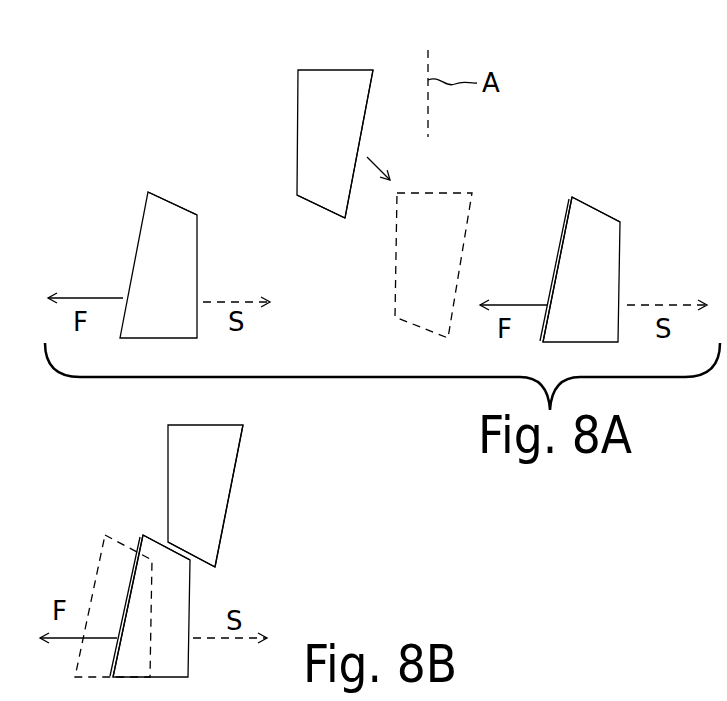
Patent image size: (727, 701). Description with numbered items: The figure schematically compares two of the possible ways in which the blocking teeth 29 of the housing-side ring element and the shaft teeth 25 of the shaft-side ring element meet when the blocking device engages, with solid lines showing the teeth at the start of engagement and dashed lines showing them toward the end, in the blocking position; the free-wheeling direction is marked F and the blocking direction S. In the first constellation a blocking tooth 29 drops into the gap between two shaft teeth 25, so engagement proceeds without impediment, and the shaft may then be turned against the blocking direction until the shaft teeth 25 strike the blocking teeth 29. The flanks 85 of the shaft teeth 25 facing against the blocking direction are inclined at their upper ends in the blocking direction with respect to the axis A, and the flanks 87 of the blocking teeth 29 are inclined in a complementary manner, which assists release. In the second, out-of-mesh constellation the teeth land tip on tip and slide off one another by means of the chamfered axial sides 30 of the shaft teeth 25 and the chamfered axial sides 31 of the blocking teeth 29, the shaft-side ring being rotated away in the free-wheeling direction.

In FIG. 8B, the shaft teeth 25 is at (177, 663).
In FIG. 8A, the blocking teeth 29 is at (323, 102).
In FIG. 8B, the blocking teeth 29 is at (222, 452).
In FIG. 8B, the axial sides of the shaft teeth 30 is at (150, 533).
In FIG. 8A, the axial sides of the blocking teeth 31 is at (323, 210).
In FIG. 8B, the axial sides of the blocking teeth 31 is at (195, 563).
In FIG. 8A, the flanks of the shaft teeth 85 is at (560, 243).
In FIG. 8B, the flanks of the shaft teeth 85 is at (133, 573).
In FIG. 8A, the flanks of the blocking teeth 87 is at (353, 188).
In FIG. 8B, the flanks of the blocking teeth 87 is at (232, 497).